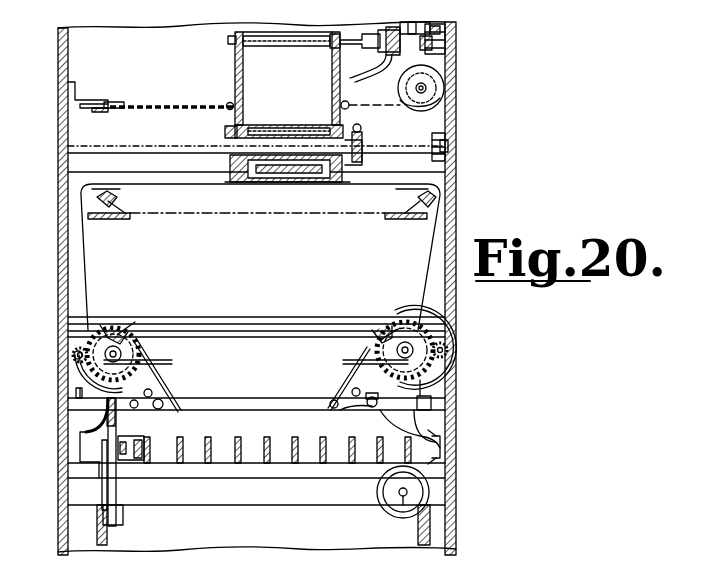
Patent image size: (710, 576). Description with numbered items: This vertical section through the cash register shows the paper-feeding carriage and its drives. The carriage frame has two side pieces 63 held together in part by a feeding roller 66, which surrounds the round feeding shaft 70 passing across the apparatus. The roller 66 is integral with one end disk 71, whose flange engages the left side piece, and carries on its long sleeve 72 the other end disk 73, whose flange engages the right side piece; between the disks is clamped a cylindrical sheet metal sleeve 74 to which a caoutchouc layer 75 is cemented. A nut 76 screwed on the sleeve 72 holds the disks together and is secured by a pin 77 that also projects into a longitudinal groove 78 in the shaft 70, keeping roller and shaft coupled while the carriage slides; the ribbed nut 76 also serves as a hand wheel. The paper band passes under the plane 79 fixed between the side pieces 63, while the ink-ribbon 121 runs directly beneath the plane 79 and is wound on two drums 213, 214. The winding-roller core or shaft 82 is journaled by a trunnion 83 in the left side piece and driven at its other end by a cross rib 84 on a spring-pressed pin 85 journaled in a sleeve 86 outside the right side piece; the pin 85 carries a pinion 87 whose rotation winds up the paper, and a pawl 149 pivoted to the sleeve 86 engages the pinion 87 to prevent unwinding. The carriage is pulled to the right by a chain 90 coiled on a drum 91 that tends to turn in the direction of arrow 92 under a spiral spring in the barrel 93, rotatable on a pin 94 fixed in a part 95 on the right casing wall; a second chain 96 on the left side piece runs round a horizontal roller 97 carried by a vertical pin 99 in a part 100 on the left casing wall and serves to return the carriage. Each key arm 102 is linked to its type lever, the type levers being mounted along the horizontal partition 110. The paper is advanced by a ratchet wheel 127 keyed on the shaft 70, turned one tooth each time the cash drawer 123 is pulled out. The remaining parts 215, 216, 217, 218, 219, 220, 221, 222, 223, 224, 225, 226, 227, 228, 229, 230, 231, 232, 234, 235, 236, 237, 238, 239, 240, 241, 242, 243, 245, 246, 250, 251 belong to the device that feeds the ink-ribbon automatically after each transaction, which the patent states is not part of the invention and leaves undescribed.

The side pieces 63 is at (243, 80).
The feeding roller 66 is at (289, 119).
The feeding shaft 70 is at (155, 152).
The end disk 71 is at (227, 132).
The long sleeve 72 is at (258, 132).
The end disk 73 is at (352, 184).
The cylindrical sheet metal sleeve 74 is at (315, 116).
The caoutchouc layer 75 is at (262, 130).
The nut 76 is at (364, 140).
The pin 77 is at (358, 128).
The longitudinal groove 78 is at (125, 146).
The plane 79 is at (275, 184).
The core or shaft 82 is at (272, 44).
The trunnion 83 is at (228, 40).
The cross rib 84 is at (325, 50).
The pin 85 is at (370, 54).
The sleeve 86 is at (415, 22).
The pinion 87 is at (456, 40).
The chain 90 is at (362, 104).
The drum 91 is at (410, 108).
The arrow 92 is at (405, 78).
The barrel 93 is at (445, 66).
The pin 94 is at (426, 88).
The part 95 is at (450, 104).
The chain 96 is at (192, 103).
The horizontal roller 97 is at (112, 103).
The vertical pin 99 is at (102, 123).
The part 100 is at (78, 92).
The key arms 102 is at (265, 440).
The horizontal partition 110 is at (208, 222).
The ink-ribbon 121 is at (160, 186).
The cash drawer 123 is at (263, 505).
The ratchet wheel 127 is at (458, 162).
The pawl 149 is at (432, 30).
The drum 213 is at (185, 320).
The drum 214 is at (380, 338).
The gear 215 is at (118, 330).
The pawl 216 is at (385, 335).
The pawl 217 is at (112, 334).
The pinion 218 is at (410, 320).
The arc 219 is at (78, 372).
The arc 220 is at (430, 372).
The stop 221 is at (76, 393).
The block 222 is at (428, 392).
The plate 223 is at (272, 401).
The pipe 224 is at (84, 432).
The pipe 225 is at (428, 416).
The pinion 226 is at (84, 350).
The rail 227 is at (445, 324).
The link 228 is at (125, 336).
The gear 229 is at (398, 330).
The bar 230 is at (152, 357).
The bar 231 is at (352, 358).
The plate 232 is at (190, 398).
The pivot 234 is at (350, 392).
The rod 235 is at (170, 366).
The rod 236 is at (352, 362).
The pivot 237 is at (155, 392).
The pivot 238 is at (375, 389).
The roller 239 is at (140, 406).
The link 240 is at (350, 412).
The nozzle 241 is at (440, 430).
The pipe 242 is at (402, 429).
The tube 243 is at (116, 420).
The rod 245 is at (108, 462).
The rod 246 is at (118, 498).
The block 250 is at (122, 518).
The valve 251 is at (138, 455).